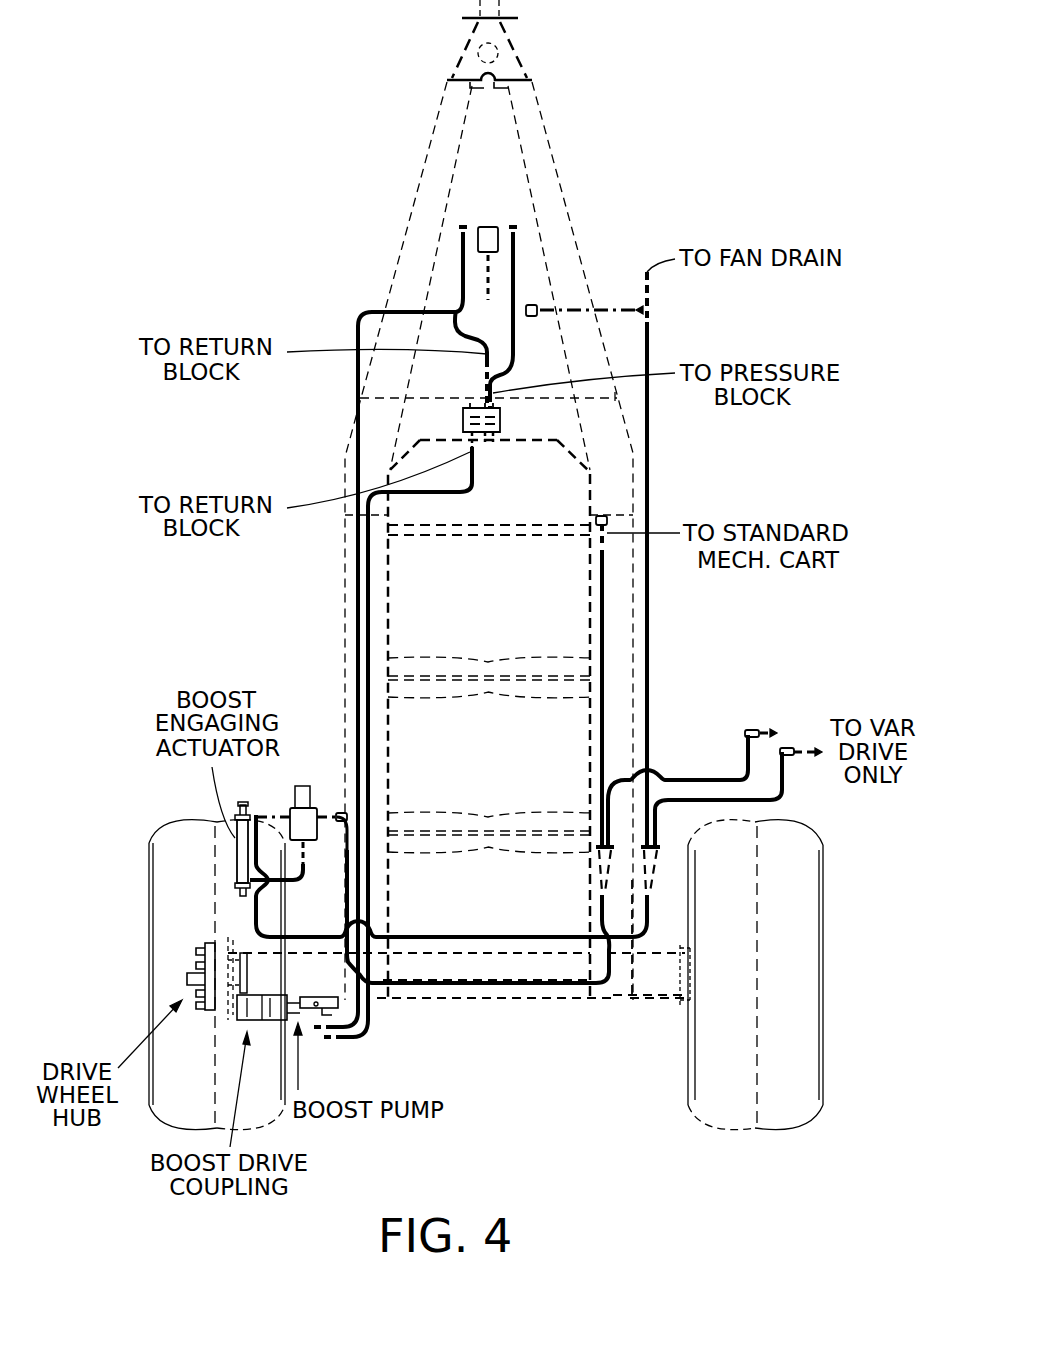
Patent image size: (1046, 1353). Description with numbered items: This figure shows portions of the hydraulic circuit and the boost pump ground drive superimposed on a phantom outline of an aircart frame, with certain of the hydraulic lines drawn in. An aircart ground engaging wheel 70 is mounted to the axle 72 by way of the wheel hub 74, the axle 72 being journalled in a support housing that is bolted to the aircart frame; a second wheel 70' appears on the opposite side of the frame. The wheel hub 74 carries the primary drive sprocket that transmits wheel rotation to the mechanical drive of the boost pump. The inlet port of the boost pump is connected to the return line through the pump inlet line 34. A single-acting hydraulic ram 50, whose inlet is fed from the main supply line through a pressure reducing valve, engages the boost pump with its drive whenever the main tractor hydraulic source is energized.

The single-acting hydraulic ram 50 is at (237, 862).
The aircart ground engaging wheel 70 is at (177, 975).
The drive wheel 70' is at (799, 975).
The wheel hub 74 is at (214, 945).
The pump inlet line 34 is at (297, 1017).
The axle 72 is at (553, 990).